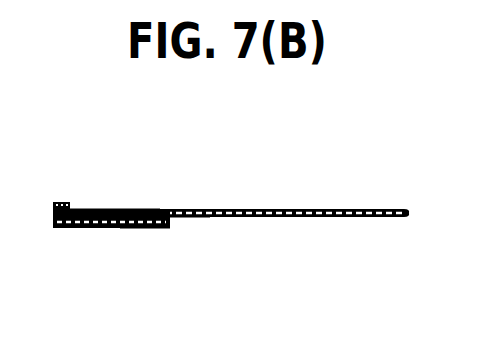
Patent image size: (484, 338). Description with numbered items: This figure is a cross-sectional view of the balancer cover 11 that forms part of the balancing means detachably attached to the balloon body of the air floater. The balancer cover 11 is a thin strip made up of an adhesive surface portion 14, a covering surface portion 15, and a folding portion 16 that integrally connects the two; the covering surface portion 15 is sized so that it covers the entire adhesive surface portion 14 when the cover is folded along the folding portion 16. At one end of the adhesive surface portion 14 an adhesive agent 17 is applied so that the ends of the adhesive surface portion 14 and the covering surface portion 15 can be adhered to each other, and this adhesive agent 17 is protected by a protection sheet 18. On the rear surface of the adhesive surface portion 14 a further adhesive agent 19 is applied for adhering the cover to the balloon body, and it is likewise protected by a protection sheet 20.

The balancer cover 11 is at (225, 210).
The adhesive surface portion 14 is at (137, 209).
The covering surface portion 15 is at (302, 209).
The folding portion 16 is at (197, 217).
The adhesive agent 17 is at (73, 208).
The protection sheet 18 is at (63, 203).
The adhesive agent 19 is at (172, 218).
The protection sheet 20 is at (140, 228).